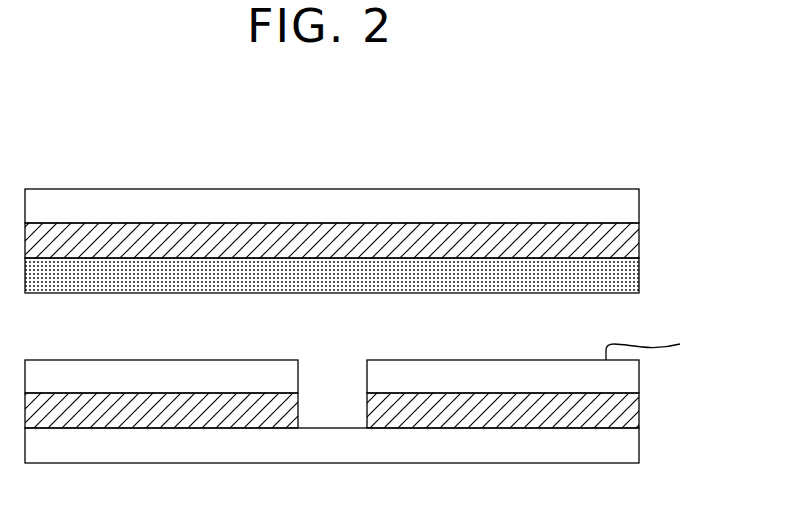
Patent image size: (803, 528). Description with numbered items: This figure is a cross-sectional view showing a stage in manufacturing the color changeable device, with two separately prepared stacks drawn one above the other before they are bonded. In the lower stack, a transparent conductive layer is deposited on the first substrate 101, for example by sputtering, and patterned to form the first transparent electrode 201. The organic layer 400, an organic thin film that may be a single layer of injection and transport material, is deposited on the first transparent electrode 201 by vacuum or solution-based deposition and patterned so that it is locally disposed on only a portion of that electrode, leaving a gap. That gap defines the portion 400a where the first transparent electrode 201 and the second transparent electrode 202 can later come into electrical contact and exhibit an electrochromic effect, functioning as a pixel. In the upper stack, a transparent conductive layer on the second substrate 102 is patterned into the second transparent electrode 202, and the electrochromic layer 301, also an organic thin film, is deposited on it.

The first substrate 101 is at (631, 446).
The second substrate 102 is at (631, 203).
The first transparent electrode 201 is at (631, 411).
The second transparent electrode 202 is at (631, 240).
The electrochromic layer 301 is at (631, 276).
The organic layer 400 is at (631, 375).
The portion in which the first and second transparent electrodes are electrically in 400a is at (672, 345).